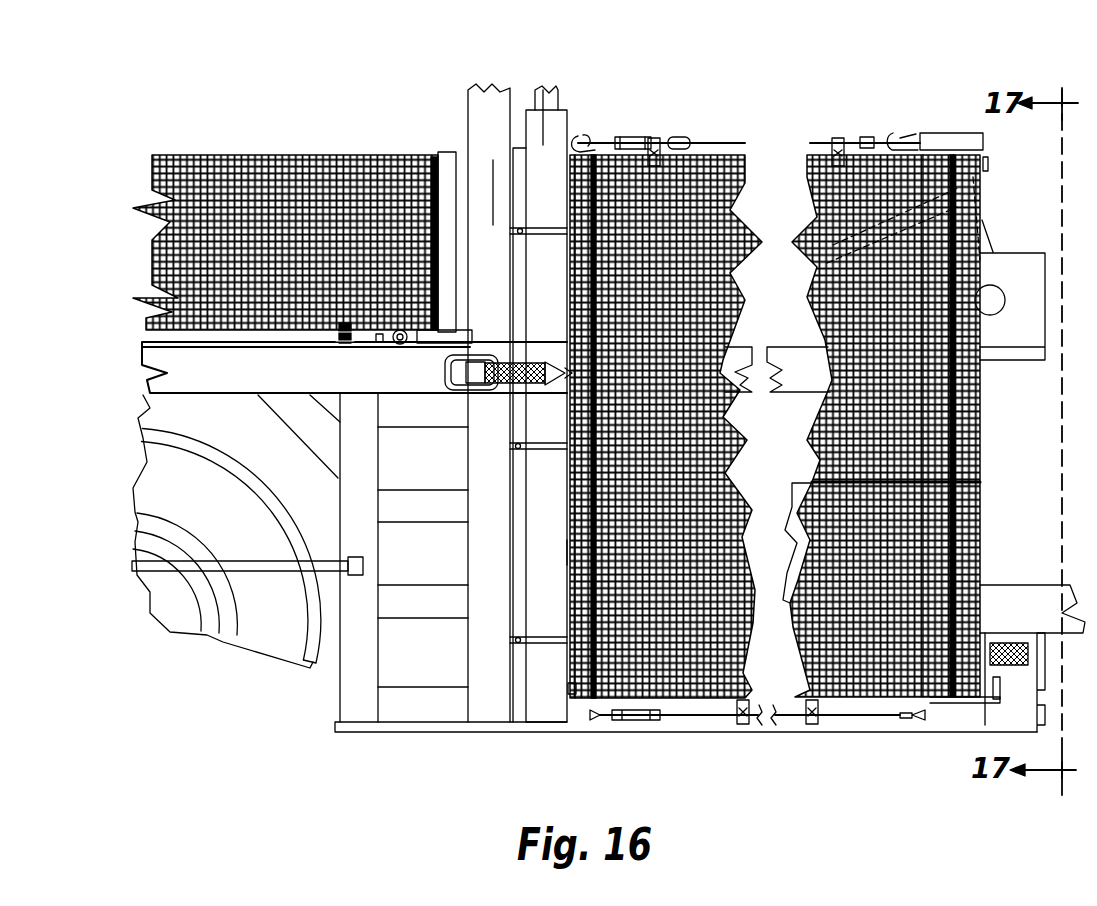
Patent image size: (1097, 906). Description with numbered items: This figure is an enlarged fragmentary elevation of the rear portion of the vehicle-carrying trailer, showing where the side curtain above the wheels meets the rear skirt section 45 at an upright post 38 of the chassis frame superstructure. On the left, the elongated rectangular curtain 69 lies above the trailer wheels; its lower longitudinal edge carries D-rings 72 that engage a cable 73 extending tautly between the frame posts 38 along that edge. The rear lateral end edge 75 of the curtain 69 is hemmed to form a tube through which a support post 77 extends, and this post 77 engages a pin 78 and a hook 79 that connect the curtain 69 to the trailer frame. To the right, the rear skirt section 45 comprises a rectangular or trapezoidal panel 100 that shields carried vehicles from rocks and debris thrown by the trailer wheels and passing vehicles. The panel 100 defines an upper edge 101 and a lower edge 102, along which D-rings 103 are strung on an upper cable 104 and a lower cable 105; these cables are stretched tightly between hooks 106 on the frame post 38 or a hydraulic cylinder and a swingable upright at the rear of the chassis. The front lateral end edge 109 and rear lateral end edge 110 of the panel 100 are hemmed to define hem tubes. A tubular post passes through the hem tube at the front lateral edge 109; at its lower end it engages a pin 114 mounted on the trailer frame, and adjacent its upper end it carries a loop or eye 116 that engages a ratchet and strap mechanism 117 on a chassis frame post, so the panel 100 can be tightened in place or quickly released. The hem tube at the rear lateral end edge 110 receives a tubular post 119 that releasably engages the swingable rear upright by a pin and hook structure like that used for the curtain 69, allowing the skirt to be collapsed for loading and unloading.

The upright post 38 is at (543, 95).
The rear section 45 is at (815, 123).
The curtain 69 is at (230, 157).
The D-rings 72 is at (342, 345).
The cable 73 is at (183, 348).
The lateral end edge 75 is at (493, 225).
The support post 77 is at (440, 152).
The pin 78 is at (443, 343).
The hook 79 is at (472, 160).
The panel 100 is at (850, 680).
The upper edge 101 is at (707, 157).
The lower edge 102 is at (667, 700).
The D-rings 103 is at (652, 140).
The upper cable 104 is at (727, 142).
The lower cable 105 is at (840, 720).
The hooks 106 is at (586, 140).
The front lateral end edge 109 is at (567, 552).
The rear lateral end edge 110 is at (983, 530).
The pin 114 is at (568, 690).
The loop or eye 116 is at (565, 372).
The ratchet and strap mechanism 117 is at (493, 390).
The tubular post 119 is at (980, 173).